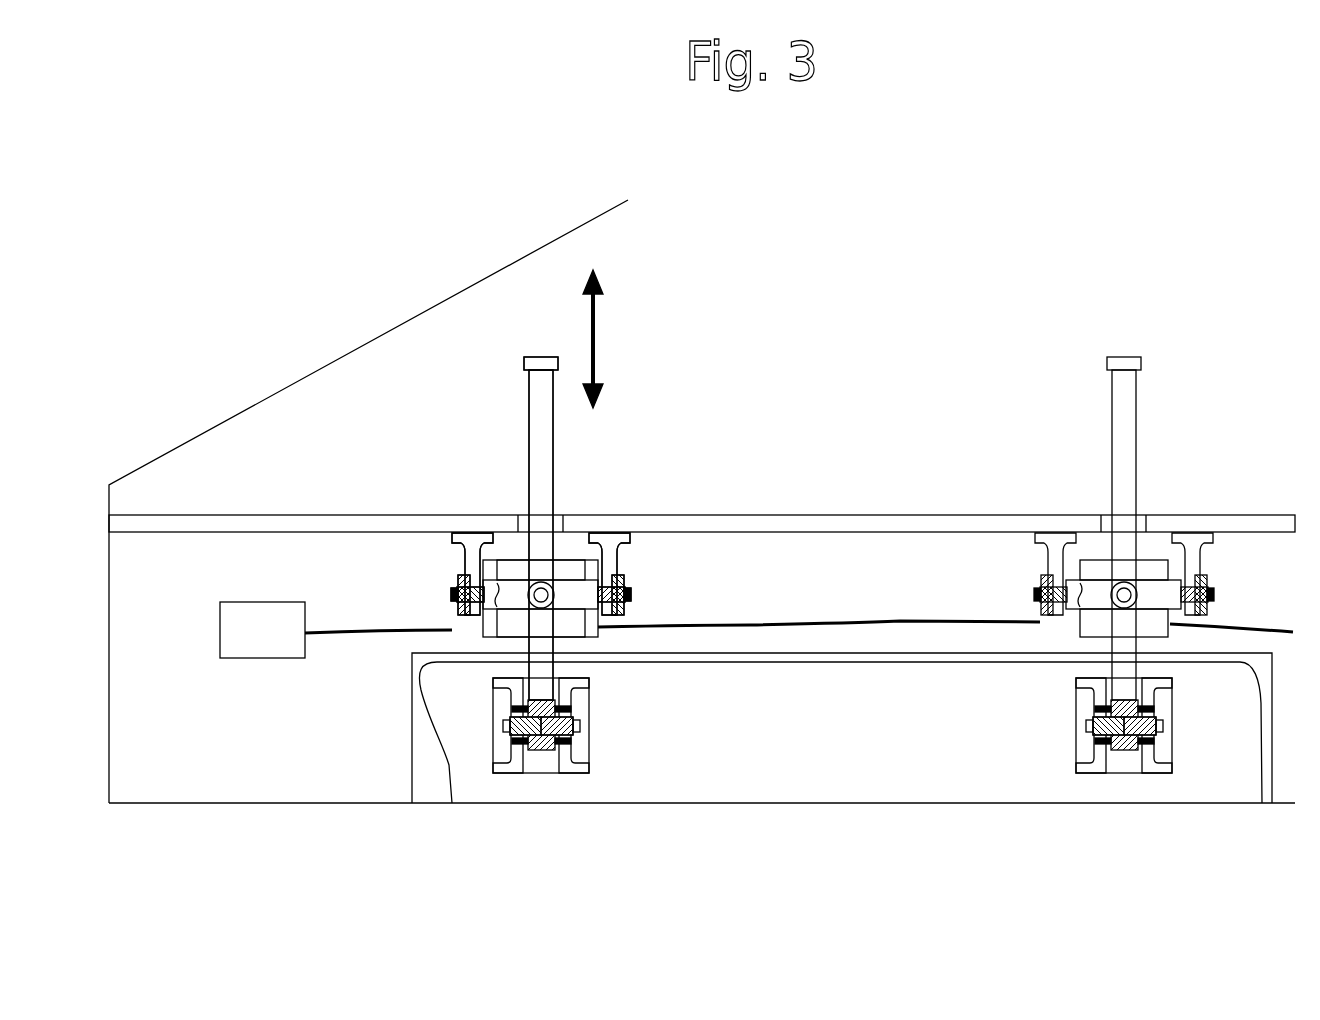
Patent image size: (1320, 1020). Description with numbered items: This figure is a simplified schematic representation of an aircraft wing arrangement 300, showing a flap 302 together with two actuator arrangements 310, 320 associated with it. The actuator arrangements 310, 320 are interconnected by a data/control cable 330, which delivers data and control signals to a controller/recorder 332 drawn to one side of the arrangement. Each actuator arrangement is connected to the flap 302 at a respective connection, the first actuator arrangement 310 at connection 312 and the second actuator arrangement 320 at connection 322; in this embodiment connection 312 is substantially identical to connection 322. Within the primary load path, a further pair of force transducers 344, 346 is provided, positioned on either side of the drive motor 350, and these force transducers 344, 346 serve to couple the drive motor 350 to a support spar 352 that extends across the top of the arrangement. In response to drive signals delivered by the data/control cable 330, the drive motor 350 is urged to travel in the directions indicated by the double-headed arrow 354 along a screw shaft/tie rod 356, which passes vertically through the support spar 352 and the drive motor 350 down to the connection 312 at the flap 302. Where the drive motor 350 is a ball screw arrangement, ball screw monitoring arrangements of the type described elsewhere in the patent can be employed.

The aircraft wing arrangement 300 is at (1000, 890).
The flap 302 is at (767, 795).
The actuator arrangement 310 is at (543, 613).
The connection 312 is at (551, 747).
The actuator arrangement 320 is at (1168, 621).
The connection 322 is at (1122, 748).
The data/control cable 330 is at (847, 623).
The controller/recorder 332 is at (250, 652).
The force transducer 344 is at (453, 592).
The force transducer 346 is at (633, 593).
The drive motor 350 is at (572, 632).
The support spar 352 is at (753, 522).
The arrow 354 is at (595, 308).
The screw shaft/tie rod 356 is at (537, 428).